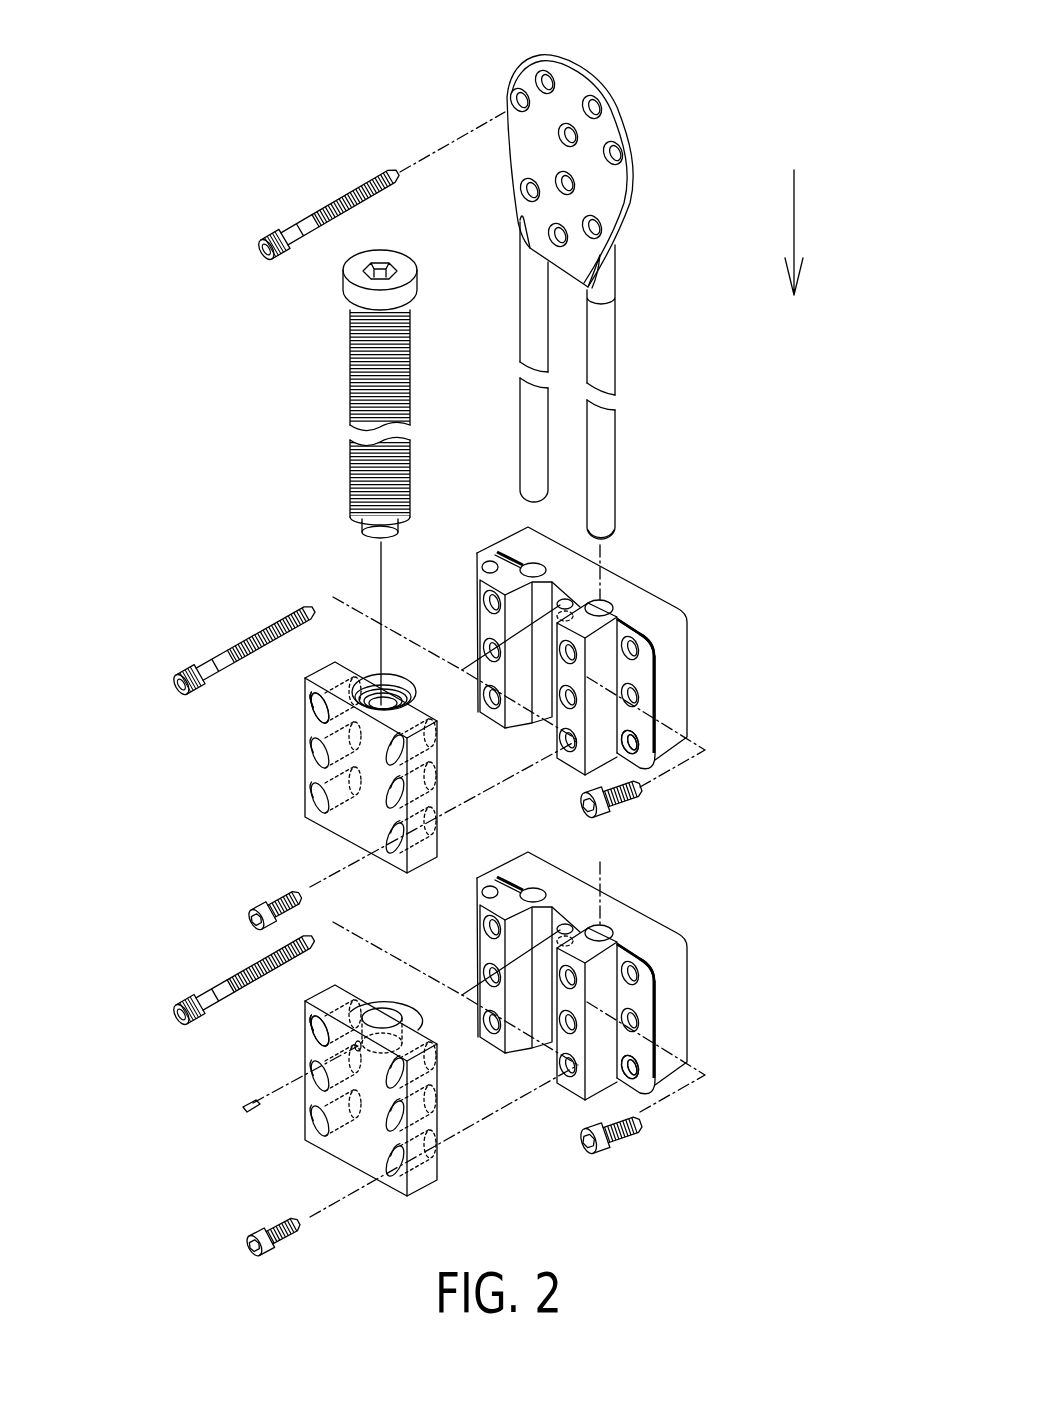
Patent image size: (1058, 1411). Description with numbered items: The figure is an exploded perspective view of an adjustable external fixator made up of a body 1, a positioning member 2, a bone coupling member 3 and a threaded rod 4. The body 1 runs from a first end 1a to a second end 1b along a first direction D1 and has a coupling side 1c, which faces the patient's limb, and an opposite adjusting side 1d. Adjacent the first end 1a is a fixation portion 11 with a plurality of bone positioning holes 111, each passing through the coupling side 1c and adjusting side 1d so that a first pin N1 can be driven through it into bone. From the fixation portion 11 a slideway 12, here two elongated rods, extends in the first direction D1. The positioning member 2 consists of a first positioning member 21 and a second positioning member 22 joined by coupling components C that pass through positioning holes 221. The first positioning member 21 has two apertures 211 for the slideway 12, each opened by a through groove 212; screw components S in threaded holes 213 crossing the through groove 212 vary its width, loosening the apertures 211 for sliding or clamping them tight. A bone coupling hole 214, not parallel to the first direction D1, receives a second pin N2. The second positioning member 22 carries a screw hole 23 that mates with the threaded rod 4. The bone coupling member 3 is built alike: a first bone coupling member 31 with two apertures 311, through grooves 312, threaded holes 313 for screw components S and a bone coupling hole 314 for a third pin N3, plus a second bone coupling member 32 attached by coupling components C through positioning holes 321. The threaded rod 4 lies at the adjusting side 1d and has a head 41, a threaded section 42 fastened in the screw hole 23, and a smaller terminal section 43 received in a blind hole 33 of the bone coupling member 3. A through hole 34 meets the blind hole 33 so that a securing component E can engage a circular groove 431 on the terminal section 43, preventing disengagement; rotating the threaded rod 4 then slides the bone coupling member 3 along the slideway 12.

The body 1 is at (580, 308).
The first end 1a is at (560, 58).
The second end 1b is at (613, 541).
The coupling side 1c is at (622, 237).
The adjusting side 1d is at (540, 238).
The fixation portion 11 is at (580, 152).
The bone positioning holes 111 is at (598, 110).
The slideway 12 is at (610, 411).
The positioning member 2 is at (509, 707).
The first positioning member 21 is at (605, 664).
The apertures 211 is at (611, 603).
The through groove 212 is at (670, 688).
The threaded holes 213 is at (635, 755).
The bone coupling hole 214 is at (558, 603).
The second positioning member 22 is at (327, 747).
The positioning holes 221 is at (318, 755).
The screw hole 23 is at (377, 680).
The bone coupling member 3 is at (507, 1034).
The first bone coupling member 31 is at (605, 1004).
The apertures 311 is at (611, 928).
The through groove 312 is at (670, 1013).
The threaded holes 313 is at (635, 1082).
The bone coupling hole 314 is at (558, 928).
The second bone coupling member 32 is at (338, 1074).
The positioning holes 321 is at (320, 1026).
The blind hole 33 is at (382, 1008).
The through hole 34 is at (356, 1046).
The threaded rod 4 is at (321, 477).
The head 41 is at (343, 292).
The threaded section 42 is at (350, 375).
The terminal section 43 is at (332, 552).
The circular groove 431 is at (326, 534).
The first pin N1 is at (275, 237).
The second pin N2 is at (192, 670).
The third pin N3 is at (192, 1000).
The screw components S is at (597, 818).
The coupling components C is at (248, 912).
The securing component E is at (246, 1113).
The first direction D1 is at (796, 256).